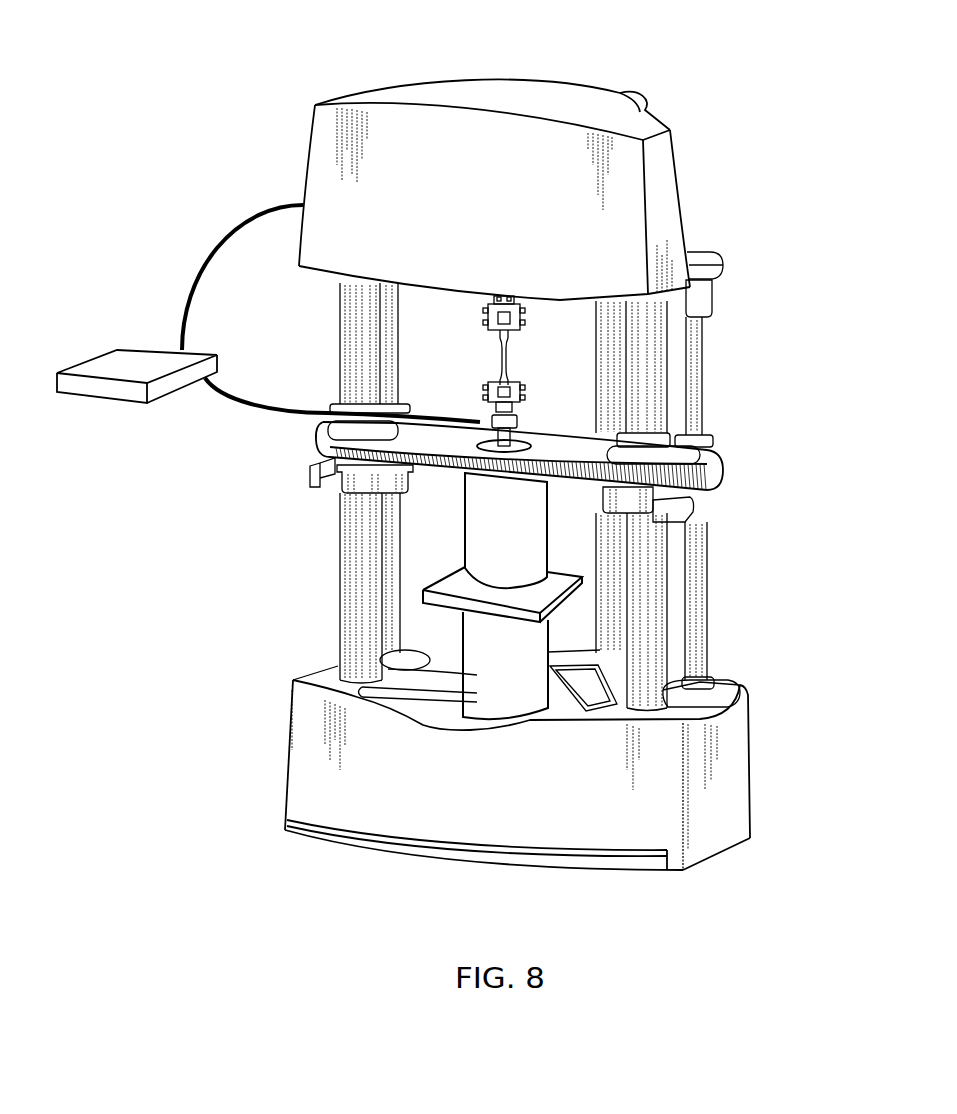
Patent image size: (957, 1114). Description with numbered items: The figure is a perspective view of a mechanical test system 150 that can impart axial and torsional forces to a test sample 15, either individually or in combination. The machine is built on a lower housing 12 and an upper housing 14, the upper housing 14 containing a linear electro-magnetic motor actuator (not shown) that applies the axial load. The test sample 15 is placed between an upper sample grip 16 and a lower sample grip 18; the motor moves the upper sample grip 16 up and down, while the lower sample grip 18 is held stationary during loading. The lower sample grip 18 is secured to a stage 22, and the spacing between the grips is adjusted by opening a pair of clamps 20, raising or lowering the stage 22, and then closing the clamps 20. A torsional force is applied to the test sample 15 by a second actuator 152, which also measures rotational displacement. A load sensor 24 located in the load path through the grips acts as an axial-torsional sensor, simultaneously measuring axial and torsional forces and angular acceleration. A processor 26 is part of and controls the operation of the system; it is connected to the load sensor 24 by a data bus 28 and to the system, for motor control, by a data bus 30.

The test system 150 is at (790, 58).
The lower housing 12 is at (498, 792).
The upper housing 14 is at (498, 197).
The test sample 15 is at (508, 358).
The upper sample grip 16 is at (488, 317).
The lower sample grip 18 is at (488, 392).
The clamps 20 is at (310, 470).
The stage 22 is at (697, 467).
The load sensor 24 is at (517, 424).
The processor 26 is at (144, 376).
The data bus 28 is at (243, 398).
The data bus 30 is at (238, 226).
The second actuator 152 is at (521, 535).